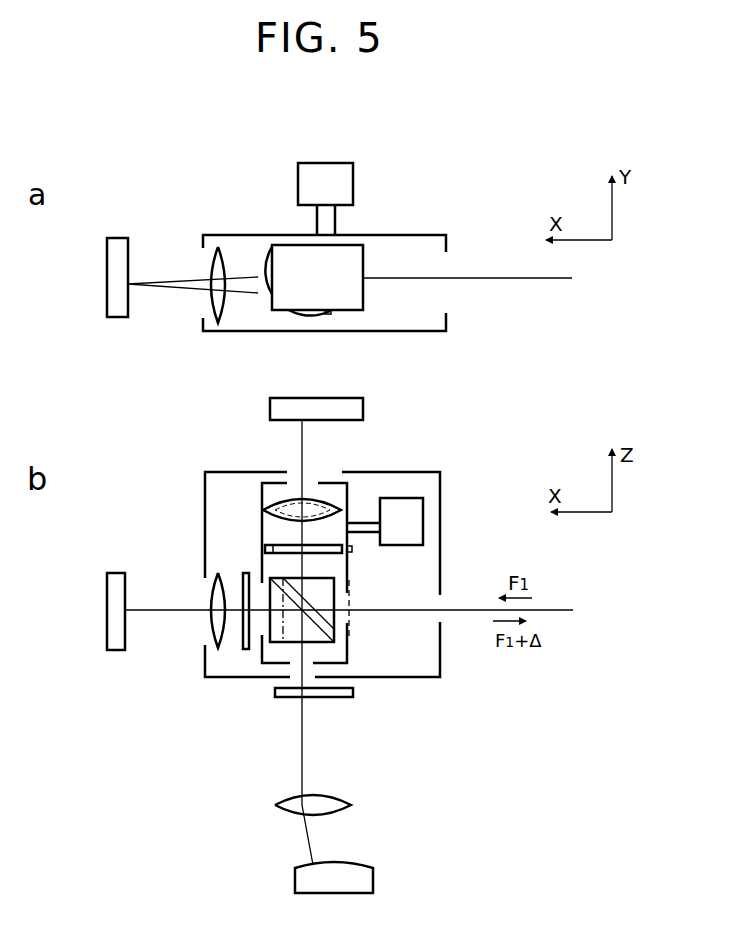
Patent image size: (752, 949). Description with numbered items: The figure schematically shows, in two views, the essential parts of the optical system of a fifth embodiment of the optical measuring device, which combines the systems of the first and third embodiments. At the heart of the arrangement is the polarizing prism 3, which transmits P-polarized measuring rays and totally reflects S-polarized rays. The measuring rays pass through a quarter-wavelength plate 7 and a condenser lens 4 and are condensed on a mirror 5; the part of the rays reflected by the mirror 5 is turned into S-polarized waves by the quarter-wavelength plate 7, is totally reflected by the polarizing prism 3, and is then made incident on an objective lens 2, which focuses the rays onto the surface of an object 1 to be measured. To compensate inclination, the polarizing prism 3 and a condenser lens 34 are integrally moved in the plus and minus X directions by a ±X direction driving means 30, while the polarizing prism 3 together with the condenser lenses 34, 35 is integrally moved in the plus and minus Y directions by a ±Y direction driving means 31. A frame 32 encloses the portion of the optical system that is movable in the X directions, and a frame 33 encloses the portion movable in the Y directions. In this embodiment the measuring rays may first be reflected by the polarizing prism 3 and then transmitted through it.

The object to be measured 1 is at (373, 870).
The objective lens 2 is at (340, 800).
The polarizing prism 3 is at (334, 618).
The condenser lens 4 is at (224, 313).
The mirror 5 is at (118, 318).
The quarter-wavelength plate 7 is at (265, 548).
The ±X direction driving means 30 is at (423, 522).
The ±Y direction driving means 31 is at (353, 188).
The frame 32 is at (271, 483).
The frame 33 is at (446, 322).
The condenser lens 34 is at (318, 500).
The condenser lens 35 is at (207, 628).